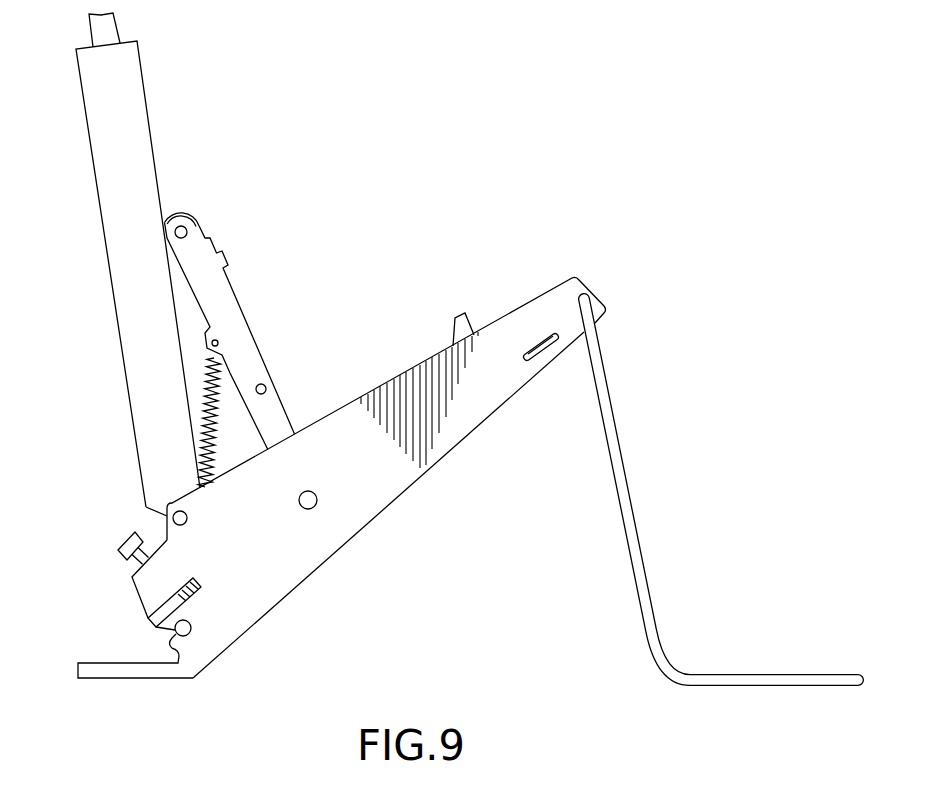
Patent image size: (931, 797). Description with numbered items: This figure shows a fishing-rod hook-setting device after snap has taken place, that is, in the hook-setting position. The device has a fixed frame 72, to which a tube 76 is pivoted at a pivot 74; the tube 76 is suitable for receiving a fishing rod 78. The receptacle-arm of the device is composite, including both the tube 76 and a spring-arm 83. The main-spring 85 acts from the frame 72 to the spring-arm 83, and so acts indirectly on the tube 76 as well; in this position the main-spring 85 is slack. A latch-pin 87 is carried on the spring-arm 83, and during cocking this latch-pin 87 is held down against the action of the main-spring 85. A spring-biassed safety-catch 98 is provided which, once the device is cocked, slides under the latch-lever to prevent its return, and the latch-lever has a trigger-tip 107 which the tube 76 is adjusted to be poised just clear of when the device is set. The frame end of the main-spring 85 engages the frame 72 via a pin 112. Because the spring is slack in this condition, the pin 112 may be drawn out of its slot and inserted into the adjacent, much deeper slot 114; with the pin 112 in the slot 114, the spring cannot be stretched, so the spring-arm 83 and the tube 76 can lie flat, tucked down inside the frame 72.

The fixed frame 72 is at (265, 587).
The pivot 74 is at (186, 521).
The tube 76 is at (127, 287).
The fishing rod 78 is at (108, 29).
The spring-arm 83 is at (225, 322).
The main-spring 85 is at (220, 455).
The latch-pin 87 is at (264, 386).
The safety-catch 98 is at (540, 360).
The trigger-tip 107 is at (455, 332).
The pin 112 is at (178, 630).
The slot 114 is at (147, 618).